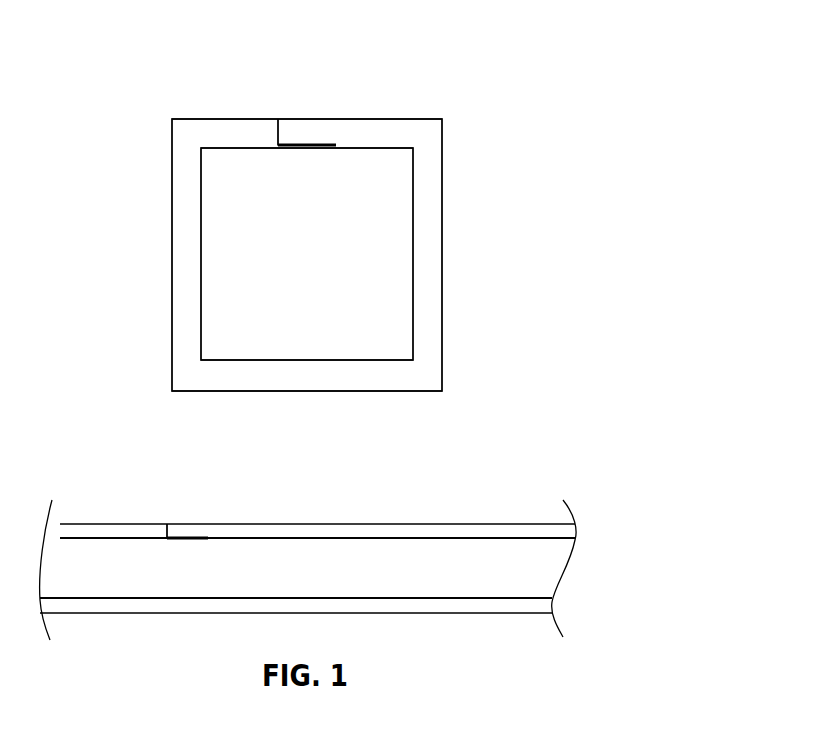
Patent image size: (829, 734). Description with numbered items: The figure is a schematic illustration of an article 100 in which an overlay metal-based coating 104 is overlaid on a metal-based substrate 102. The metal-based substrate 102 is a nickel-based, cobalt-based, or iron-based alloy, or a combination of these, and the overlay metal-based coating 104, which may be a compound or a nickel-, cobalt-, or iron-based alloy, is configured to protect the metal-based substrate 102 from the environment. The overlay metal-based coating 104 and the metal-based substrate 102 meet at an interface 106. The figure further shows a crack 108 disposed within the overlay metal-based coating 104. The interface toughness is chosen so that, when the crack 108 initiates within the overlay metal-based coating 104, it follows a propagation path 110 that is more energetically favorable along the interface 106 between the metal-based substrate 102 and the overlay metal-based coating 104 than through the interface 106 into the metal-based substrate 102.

The article 100 is at (532, 57).
The metal-based substrate 102 is at (230, 274).
The overlay metal-based coating 104 is at (425, 375).
The interface 106 is at (418, 142).
The crack 108 is at (278, 132).
The propagation path 110 is at (298, 138).